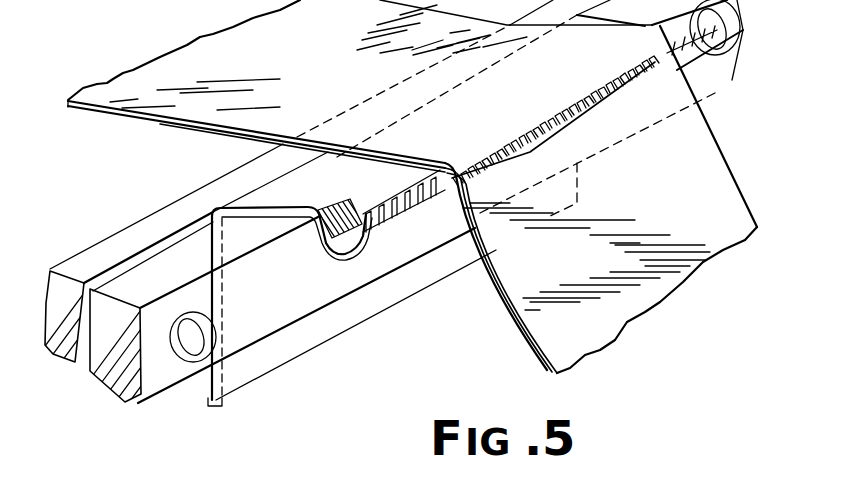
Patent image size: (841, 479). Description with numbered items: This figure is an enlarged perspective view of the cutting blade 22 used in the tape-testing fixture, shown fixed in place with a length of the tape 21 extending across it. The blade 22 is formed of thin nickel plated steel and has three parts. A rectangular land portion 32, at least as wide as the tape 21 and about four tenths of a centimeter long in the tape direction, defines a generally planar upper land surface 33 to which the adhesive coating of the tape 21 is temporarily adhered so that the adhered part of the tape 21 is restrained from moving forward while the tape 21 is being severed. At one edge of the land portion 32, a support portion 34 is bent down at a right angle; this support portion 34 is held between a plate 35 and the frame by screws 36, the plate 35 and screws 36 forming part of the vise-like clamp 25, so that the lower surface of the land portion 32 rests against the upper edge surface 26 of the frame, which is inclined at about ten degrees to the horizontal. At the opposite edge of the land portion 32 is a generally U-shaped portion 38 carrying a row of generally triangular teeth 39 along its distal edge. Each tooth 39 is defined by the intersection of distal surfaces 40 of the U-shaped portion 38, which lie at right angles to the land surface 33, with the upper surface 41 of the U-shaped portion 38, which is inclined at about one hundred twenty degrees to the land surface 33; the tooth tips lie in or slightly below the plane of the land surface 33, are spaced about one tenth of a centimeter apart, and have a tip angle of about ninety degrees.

The tape 21 is at (318, 68).
The cutting blade 22 is at (345, 272).
The vise-like clamp 25 is at (72, 378).
The upper edge surface 26 is at (158, 282).
The land portion 32 is at (264, 216).
The land surface 33 is at (277, 192).
The support portion 34 is at (294, 350).
The plate 35 is at (82, 257).
The screws 36 is at (181, 362).
The U-shaped portion 38 is at (323, 250).
The teeth 39 is at (397, 198).
The distal surfaces 40 is at (429, 195).
The upper surface 41 is at (352, 203).